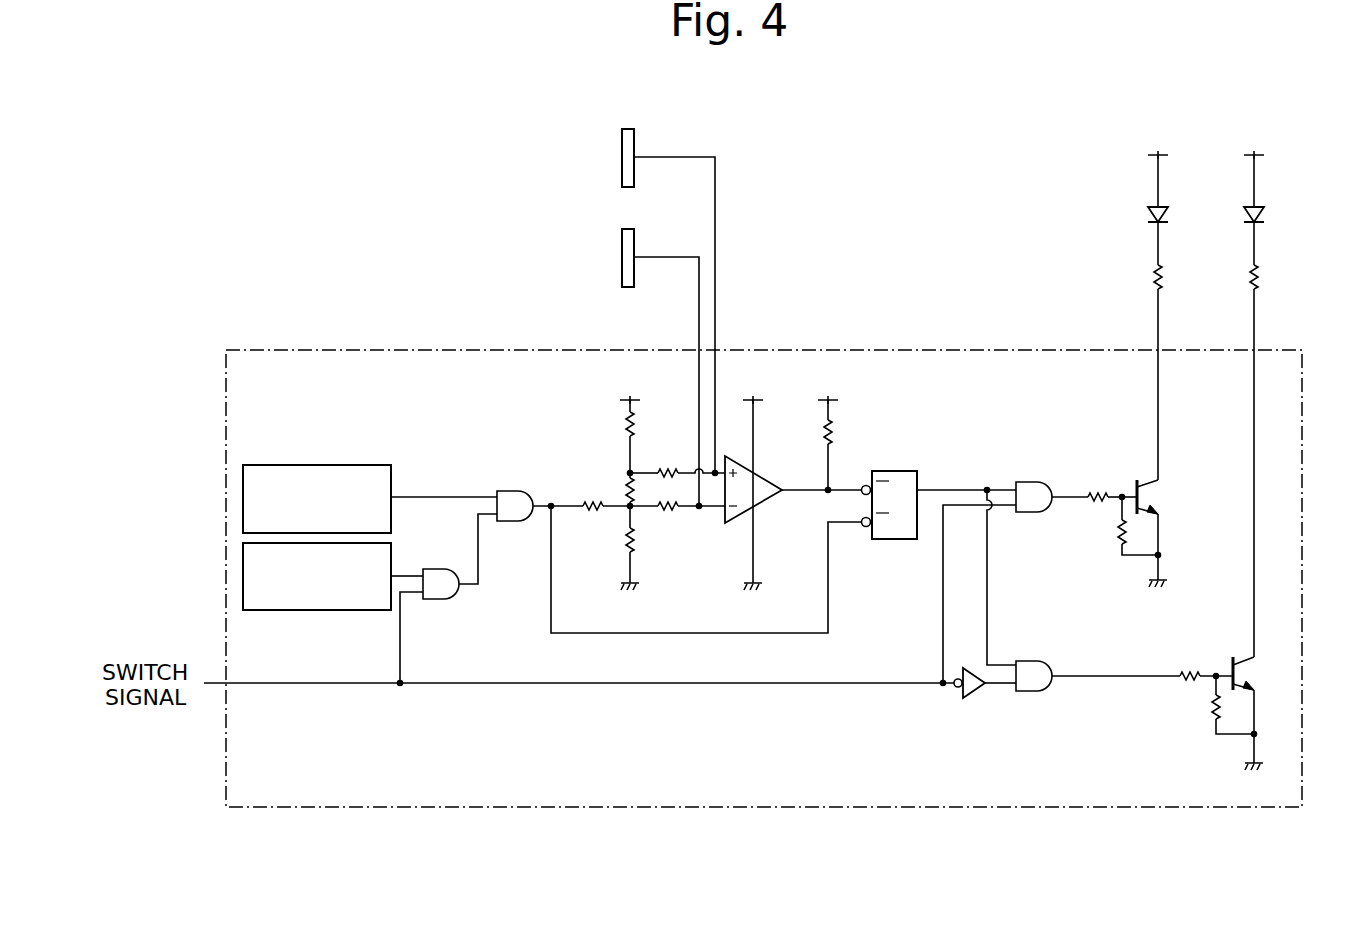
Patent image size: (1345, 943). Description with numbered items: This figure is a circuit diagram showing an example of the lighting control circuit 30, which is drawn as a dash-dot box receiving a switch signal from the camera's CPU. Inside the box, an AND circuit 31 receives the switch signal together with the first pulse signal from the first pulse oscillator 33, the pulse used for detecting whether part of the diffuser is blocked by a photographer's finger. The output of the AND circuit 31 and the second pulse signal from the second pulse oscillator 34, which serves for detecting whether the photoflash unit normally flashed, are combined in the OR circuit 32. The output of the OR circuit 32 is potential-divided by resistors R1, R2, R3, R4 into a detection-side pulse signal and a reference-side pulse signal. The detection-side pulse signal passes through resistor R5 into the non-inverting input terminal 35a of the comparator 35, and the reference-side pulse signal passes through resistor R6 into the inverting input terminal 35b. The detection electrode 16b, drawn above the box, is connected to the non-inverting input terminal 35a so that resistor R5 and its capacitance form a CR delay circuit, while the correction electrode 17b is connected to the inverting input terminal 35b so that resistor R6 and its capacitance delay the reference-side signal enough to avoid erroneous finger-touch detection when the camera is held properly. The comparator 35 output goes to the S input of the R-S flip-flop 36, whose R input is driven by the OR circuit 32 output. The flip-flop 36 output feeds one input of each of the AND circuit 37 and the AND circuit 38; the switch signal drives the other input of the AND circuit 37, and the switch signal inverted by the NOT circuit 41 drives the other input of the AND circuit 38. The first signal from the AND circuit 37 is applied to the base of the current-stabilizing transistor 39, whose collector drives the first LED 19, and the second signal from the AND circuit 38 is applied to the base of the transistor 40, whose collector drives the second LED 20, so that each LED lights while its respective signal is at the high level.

The detection electrode 16b is at (634, 142).
The correction electrode 17b is at (634, 242).
The first LED 19 is at (1166, 213).
The second LED 20 is at (1262, 213).
The lighting control circuit 30 is at (988, 808).
The AND circuit 31 is at (438, 604).
The OR circuit 32 is at (512, 490).
The first pulse oscillator 33 is at (345, 612).
The second pulse oscillator 34 is at (346, 465).
The comparator 35 is at (736, 477).
The non-inverting input terminal 35a is at (717, 460).
The inverting input terminal 35b is at (720, 508).
The R-S flip-flop 36 is at (905, 468).
The AND circuit 37 is at (1038, 478).
The AND circuit 38 is at (1030, 694).
The transistor 39 is at (1148, 496).
The transistor 40 is at (1232, 660).
The NOT circuit 41 is at (975, 700).
The resistor R1 is at (593, 493).
The resistor R2 is at (616, 426).
The resistor R3 is at (643, 494).
The resistor R4 is at (616, 544).
The resistor R5 is at (670, 461).
The resistor R6 is at (670, 524).